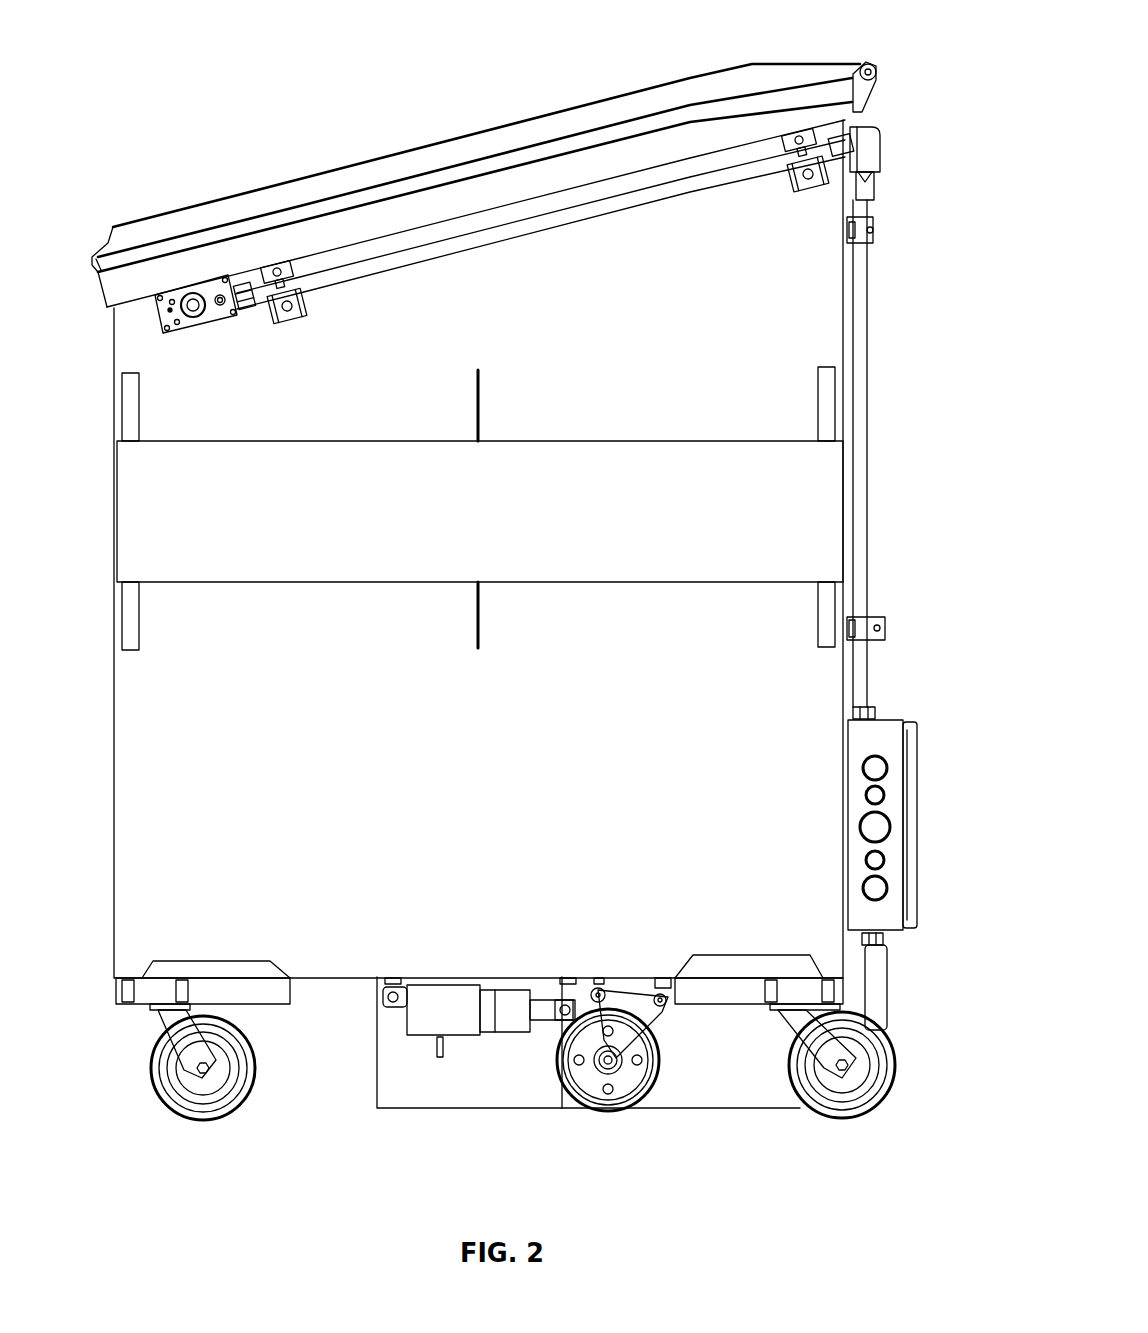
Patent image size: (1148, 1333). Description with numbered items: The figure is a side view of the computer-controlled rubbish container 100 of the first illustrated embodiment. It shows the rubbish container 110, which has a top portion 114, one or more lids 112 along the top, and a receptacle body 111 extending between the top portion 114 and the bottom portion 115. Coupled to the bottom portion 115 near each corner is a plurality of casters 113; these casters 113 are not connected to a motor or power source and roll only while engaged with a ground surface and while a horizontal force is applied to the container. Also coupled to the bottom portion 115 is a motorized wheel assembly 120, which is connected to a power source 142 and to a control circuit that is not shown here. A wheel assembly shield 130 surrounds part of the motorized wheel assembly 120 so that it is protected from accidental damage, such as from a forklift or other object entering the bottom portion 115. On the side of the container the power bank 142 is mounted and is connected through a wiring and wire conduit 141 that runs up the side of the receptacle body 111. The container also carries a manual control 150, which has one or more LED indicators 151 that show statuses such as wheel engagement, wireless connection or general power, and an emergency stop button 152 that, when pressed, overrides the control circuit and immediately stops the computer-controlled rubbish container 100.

The computer-controlled rubbish container 100 is at (198, 64).
The rubbish container 110 is at (595, 80).
The receptacle body 111 is at (484, 728).
The lids 112 is at (418, 148).
The casters 113 is at (176, 1115).
The top portion 114 is at (861, 62).
The bottom portion 115 is at (340, 980).
The motorized wheel assembly 120 is at (536, 1058).
The wheel assembly shield 130 is at (402, 1108).
The wiring and wire conduit 141 is at (866, 320).
The power bank 142 is at (893, 720).
The manual control 150 is at (208, 318).
The LED indicators 151 is at (160, 312).
The emergency stop button 152 is at (192, 296).